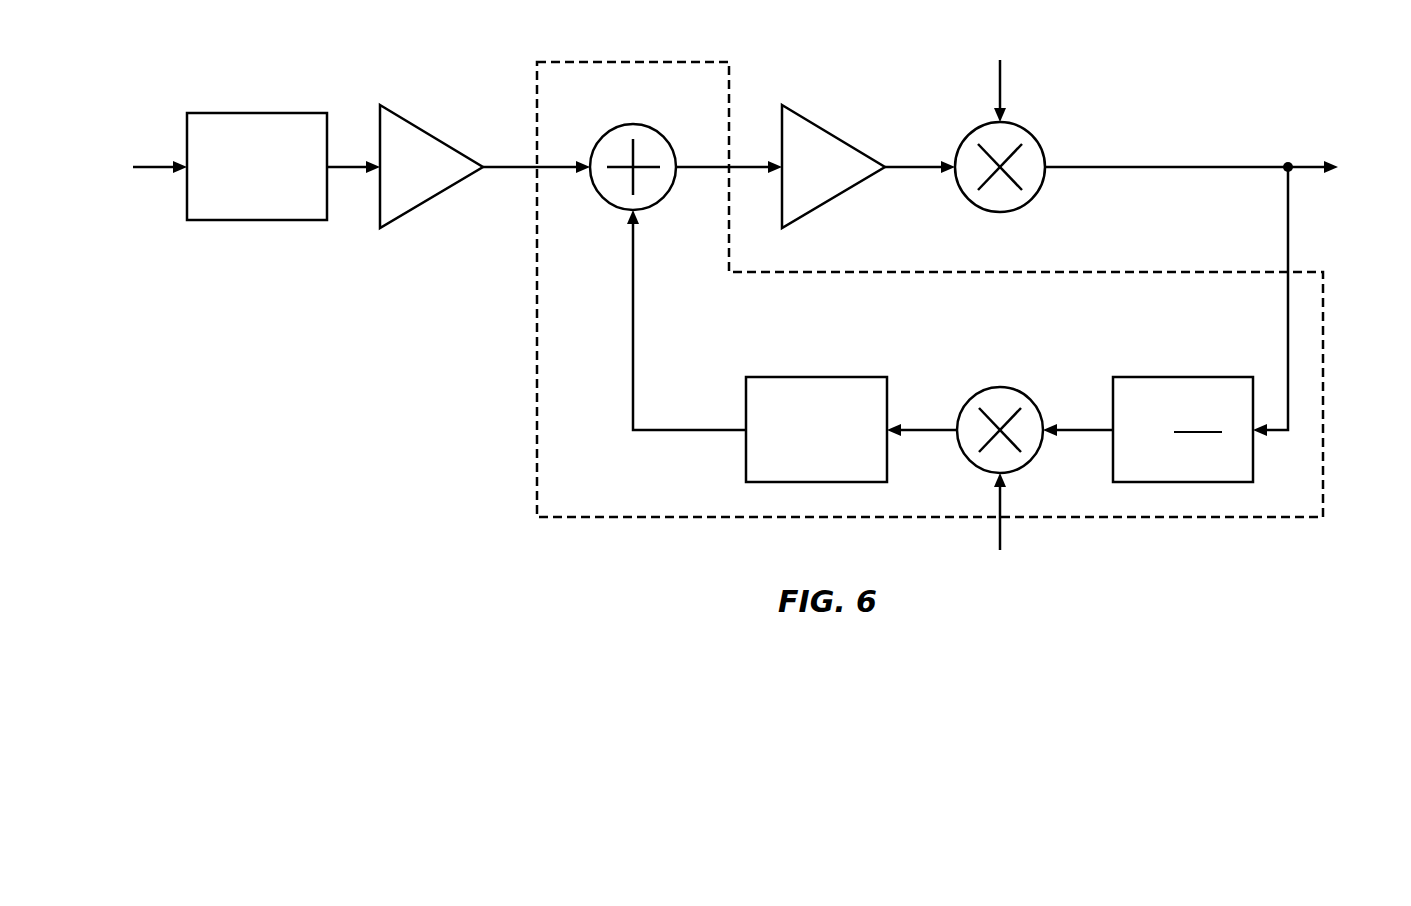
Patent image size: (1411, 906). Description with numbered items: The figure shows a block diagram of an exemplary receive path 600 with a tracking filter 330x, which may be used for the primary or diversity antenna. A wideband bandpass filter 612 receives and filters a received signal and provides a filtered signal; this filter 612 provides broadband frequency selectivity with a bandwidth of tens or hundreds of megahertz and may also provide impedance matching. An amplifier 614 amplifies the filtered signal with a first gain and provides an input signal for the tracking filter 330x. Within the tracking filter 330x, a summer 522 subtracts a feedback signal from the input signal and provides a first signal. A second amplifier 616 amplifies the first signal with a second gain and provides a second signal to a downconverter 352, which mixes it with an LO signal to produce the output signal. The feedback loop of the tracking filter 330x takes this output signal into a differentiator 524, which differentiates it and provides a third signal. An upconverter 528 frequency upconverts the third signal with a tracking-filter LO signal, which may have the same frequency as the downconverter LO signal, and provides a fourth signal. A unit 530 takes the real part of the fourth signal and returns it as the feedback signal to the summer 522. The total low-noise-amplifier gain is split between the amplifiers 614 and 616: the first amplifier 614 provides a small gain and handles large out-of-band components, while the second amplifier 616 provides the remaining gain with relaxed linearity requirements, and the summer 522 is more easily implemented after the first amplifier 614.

The receive path 600 is at (1328, 58).
The wideband bandpass filter 612 is at (254, 113).
The amplifier 614 is at (438, 116).
The summer 522 is at (626, 122).
The amplifier 616 is at (840, 116).
The downconverter 352 is at (1027, 128).
The tracking filter 330x is at (993, 272).
The unit 530 is at (810, 377).
The upconverter 528 is at (994, 385).
The differentiator 524 is at (1178, 377).